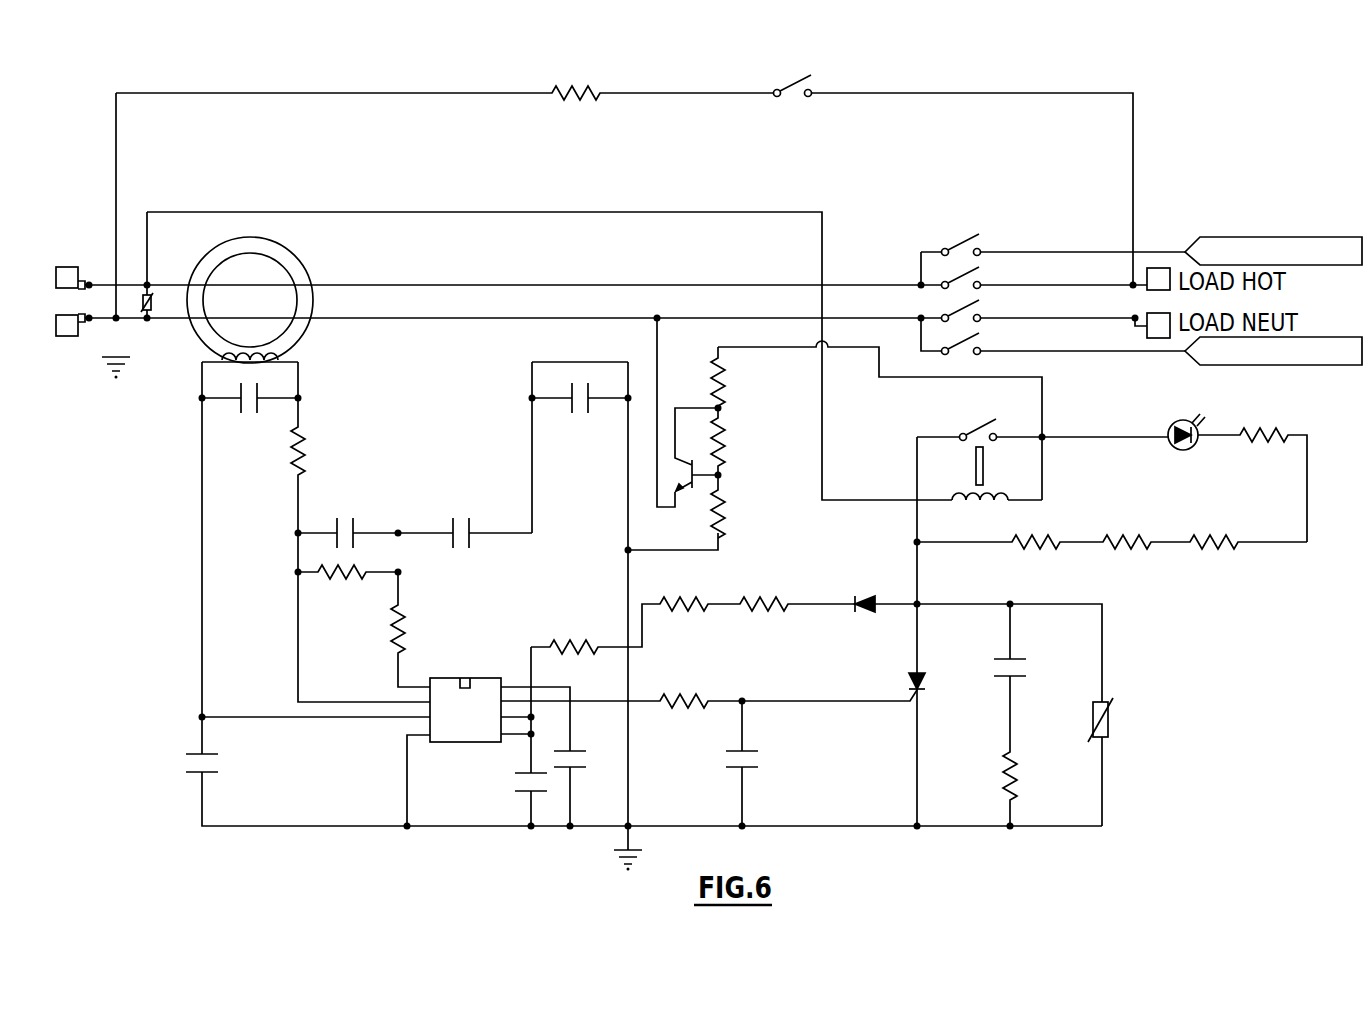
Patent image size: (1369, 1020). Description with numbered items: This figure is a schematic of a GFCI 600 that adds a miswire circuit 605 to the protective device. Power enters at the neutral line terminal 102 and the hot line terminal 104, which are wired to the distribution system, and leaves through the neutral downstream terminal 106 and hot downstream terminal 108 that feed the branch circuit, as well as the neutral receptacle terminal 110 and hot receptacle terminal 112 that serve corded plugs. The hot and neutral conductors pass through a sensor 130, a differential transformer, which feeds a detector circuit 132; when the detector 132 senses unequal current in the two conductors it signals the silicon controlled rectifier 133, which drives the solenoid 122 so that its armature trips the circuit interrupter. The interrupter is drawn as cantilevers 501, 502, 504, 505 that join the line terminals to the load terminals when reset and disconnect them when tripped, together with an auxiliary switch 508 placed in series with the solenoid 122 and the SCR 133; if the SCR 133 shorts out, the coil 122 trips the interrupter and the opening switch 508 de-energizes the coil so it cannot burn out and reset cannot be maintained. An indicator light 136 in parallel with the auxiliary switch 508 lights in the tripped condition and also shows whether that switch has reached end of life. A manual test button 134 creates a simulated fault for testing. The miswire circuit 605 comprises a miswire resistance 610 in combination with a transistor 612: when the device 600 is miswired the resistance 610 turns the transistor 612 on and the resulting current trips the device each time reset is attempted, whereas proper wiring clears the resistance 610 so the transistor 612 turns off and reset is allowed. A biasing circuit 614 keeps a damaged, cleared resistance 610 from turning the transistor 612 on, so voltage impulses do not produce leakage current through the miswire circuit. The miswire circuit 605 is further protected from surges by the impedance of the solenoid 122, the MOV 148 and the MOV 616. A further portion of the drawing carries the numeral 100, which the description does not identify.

The power supply circuit 100 is at (1036, 596).
The neutral line terminal 102 is at (66, 398).
The hot line terminal 104 is at (70, 210).
The neutral downstream terminal 106 is at (1152, 268).
The hot downstream terminal 108 is at (1146, 332).
The neutral receptacle terminal 110 is at (1320, 337).
The hot receptacle terminal 112 is at (1320, 237).
The solenoid 122 is at (996, 492).
The sensor 130 is at (295, 256).
The detector circuit 132 is at (461, 678).
The silicon controlled rectifier 133 is at (912, 687).
The test button 134 is at (795, 101).
The indicator light 136 is at (1185, 452).
The MOV 148 is at (149, 320).
The cantilever 501 is at (978, 249).
The cantilever 502 is at (979, 280).
The cantilever 504 is at (979, 312).
The cantilever 505 is at (979, 345).
The auxiliary switch 508 is at (968, 425).
The GFCI 600 is at (1194, 158).
The miswire circuit 605 is at (752, 535).
The miswire resistance 610 is at (738, 380).
The transistor 612 is at (670, 408).
The biasing circuit 614 is at (737, 474).
The MOV 616 is at (1110, 700).